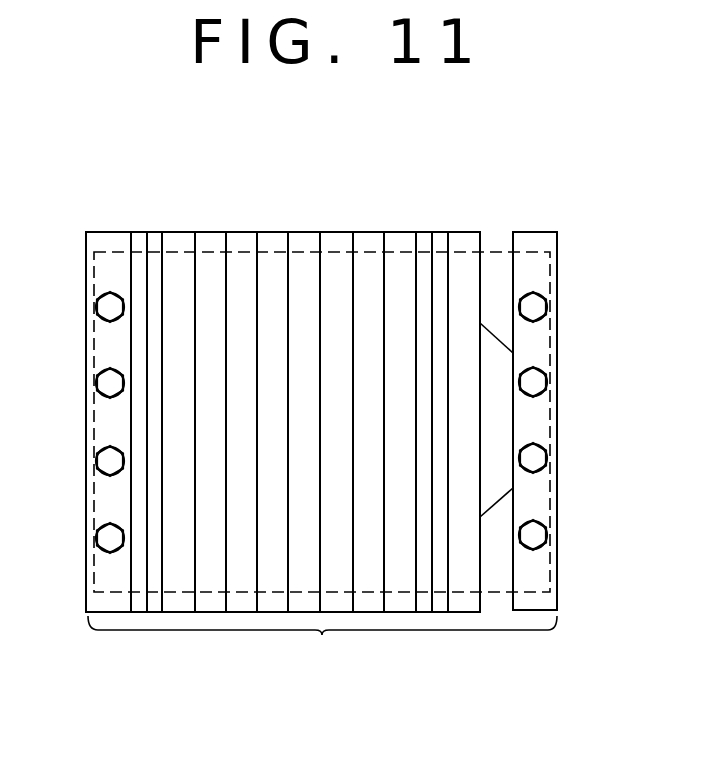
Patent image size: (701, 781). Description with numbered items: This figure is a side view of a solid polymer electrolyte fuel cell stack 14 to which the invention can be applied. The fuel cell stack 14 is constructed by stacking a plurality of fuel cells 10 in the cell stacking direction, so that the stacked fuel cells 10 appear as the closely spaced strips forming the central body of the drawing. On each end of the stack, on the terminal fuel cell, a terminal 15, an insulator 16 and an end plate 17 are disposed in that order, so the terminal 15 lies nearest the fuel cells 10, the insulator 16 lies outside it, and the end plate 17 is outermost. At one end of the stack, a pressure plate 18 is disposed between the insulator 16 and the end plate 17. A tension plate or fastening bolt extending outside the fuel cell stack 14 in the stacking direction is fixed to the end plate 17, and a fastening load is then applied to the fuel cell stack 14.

The fuel cell 10 is at (405, 243).
The fuel cell stack 14 is at (321, 450).
The terminal 15 is at (157, 243).
The insulator 16 is at (140, 243).
The end plate 17 is at (106, 243).
The pressure plate 18 is at (464, 603).